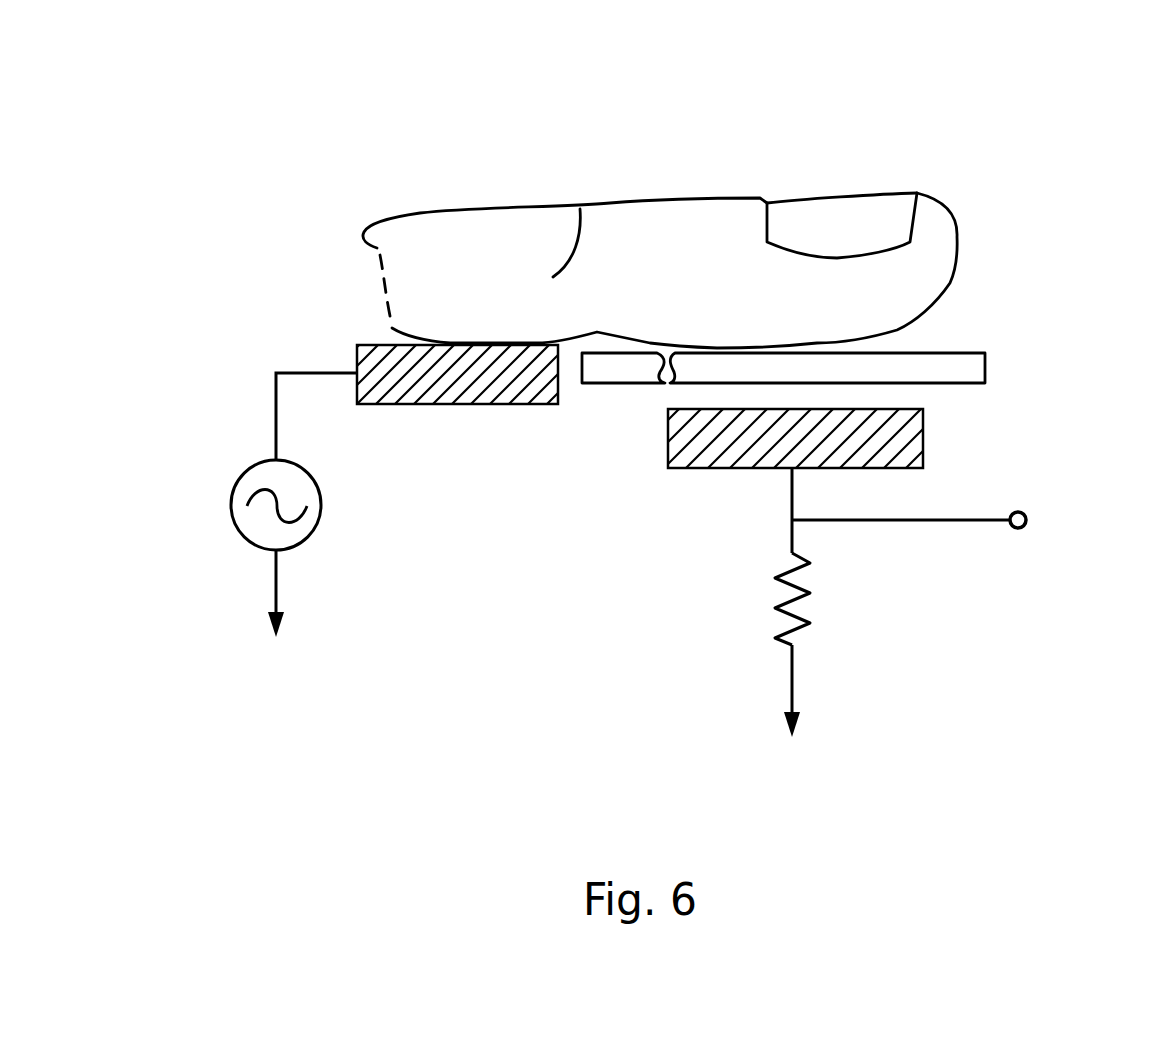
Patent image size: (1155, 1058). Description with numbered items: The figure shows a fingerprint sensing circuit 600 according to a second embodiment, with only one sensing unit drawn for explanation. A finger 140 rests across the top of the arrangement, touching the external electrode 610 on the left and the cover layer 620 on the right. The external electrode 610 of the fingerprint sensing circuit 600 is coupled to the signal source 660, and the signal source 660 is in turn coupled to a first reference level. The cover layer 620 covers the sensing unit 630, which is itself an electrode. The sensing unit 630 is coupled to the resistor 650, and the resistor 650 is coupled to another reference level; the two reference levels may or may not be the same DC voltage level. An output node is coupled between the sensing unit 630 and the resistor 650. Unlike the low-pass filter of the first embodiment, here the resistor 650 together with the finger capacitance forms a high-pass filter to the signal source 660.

The fingerprint sensing circuit 600 is at (928, 59).
The finger 140 is at (620, 207).
The external electrode 610 is at (357, 352).
The cover layer 620 is at (987, 360).
The sensing unit 630 is at (923, 435).
The resistor 650 is at (816, 613).
The signal source 660 is at (320, 495).